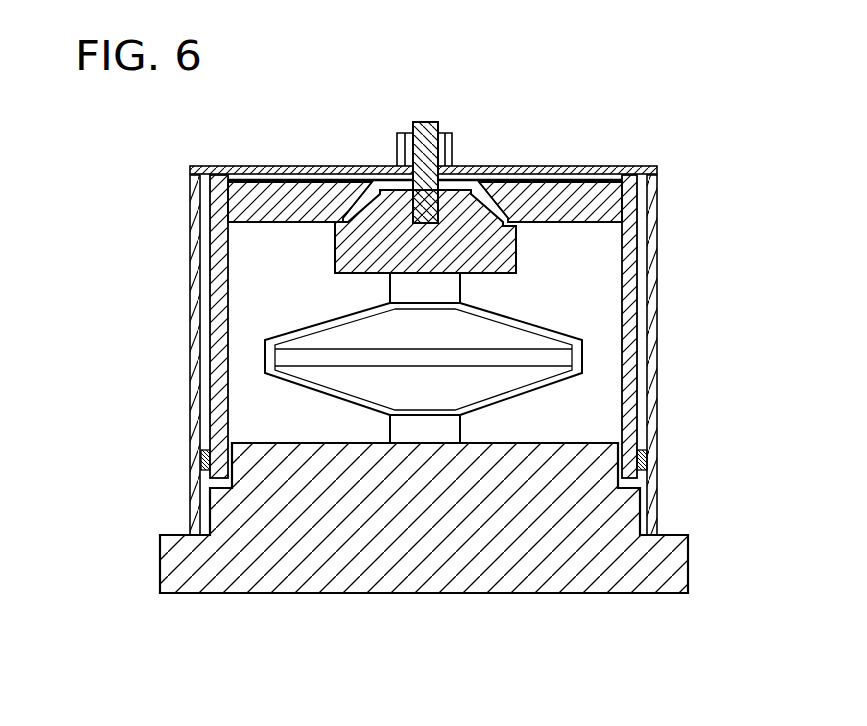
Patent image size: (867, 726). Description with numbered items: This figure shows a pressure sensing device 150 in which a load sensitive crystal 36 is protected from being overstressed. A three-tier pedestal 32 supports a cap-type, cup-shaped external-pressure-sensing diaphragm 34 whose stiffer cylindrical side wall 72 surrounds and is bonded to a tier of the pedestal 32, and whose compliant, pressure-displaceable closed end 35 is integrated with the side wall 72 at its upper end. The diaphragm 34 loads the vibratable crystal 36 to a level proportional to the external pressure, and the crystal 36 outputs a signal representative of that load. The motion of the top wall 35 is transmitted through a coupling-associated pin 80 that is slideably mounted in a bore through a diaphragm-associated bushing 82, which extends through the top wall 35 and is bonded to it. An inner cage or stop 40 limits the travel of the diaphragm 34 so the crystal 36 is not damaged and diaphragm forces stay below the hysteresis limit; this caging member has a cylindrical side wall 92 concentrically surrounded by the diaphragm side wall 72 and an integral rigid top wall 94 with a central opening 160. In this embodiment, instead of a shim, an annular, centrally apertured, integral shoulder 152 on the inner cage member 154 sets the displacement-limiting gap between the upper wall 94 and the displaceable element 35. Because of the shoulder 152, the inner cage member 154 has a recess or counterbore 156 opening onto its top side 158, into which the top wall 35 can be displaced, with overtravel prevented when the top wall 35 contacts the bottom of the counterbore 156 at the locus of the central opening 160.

The pedestal 32 is at (692, 563).
The diaphragm 34 is at (188, 412).
The closed end 35 is at (305, 166).
The crystal 36 is at (329, 319).
The inner cage 40 is at (212, 285).
The side wall 72 is at (659, 335).
The pin 80 is at (436, 121).
The bushing 82 is at (396, 142).
The side wall 92 is at (216, 330).
The top wall 94 is at (503, 180).
The pressure sensing device 150 is at (139, 205).
The shoulder 152 is at (630, 178).
The inner cage member 154 is at (636, 282).
The counterbore 156 is at (533, 176).
The top side 158 is at (218, 166).
The central opening 160 is at (364, 199).